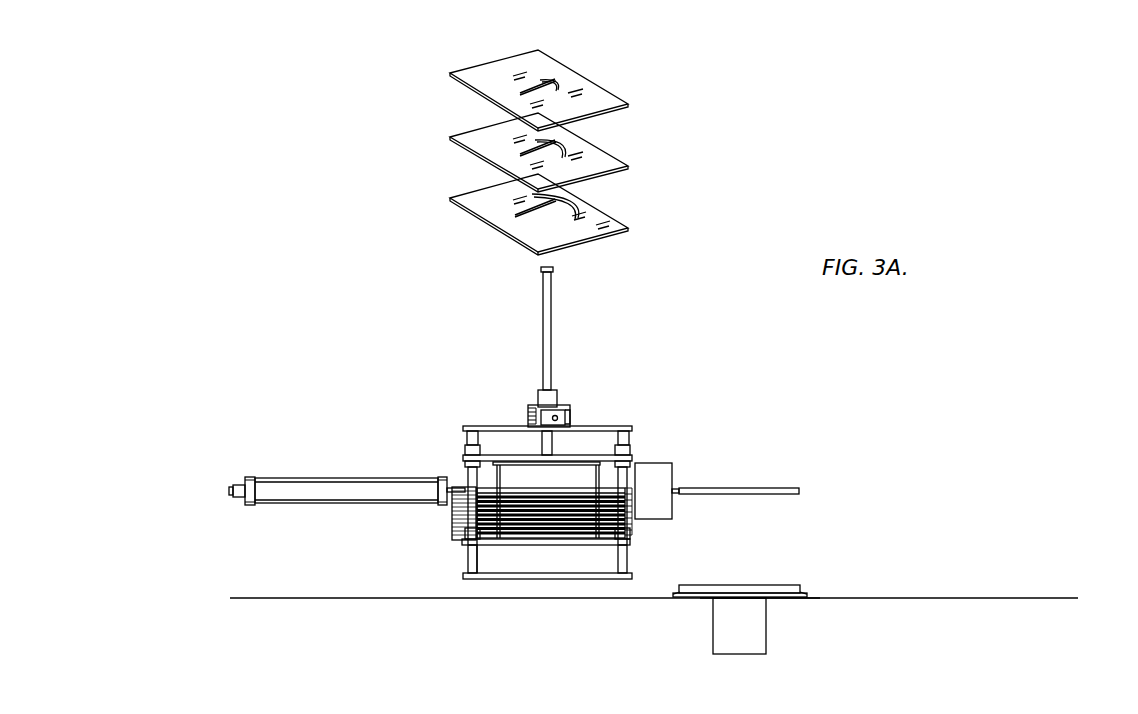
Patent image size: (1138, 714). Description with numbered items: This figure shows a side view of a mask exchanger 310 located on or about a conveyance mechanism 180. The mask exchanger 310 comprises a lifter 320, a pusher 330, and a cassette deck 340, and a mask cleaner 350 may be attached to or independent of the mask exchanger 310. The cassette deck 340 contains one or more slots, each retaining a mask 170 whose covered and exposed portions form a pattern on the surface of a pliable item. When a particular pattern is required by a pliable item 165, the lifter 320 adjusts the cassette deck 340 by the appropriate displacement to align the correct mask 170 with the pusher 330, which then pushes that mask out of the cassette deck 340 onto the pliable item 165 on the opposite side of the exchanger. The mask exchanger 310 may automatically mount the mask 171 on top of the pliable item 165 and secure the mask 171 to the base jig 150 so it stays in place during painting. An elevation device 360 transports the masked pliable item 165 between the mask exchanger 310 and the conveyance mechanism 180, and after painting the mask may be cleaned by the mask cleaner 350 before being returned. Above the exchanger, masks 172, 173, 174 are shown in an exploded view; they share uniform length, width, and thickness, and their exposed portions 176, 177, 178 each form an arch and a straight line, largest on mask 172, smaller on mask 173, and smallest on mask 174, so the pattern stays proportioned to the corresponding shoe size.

The base jig 150 is at (780, 600).
The pliable item 165 is at (805, 592).
The mask 170 is at (632, 527).
The mask 171 is at (732, 488).
The mask 172 is at (579, 214).
The mask 173 is at (579, 151).
The mask 174 is at (581, 81).
The exposed portion 176 is at (527, 212).
The exposed portion 177 is at (530, 150).
The exposed portion 178 is at (559, 88).
The conveyance mechanism 180 is at (1060, 615).
The mask exchanger 310 is at (469, 423).
The lifter 320 is at (551, 335).
The pusher 330 is at (343, 477).
The cassette deck 340 is at (600, 443).
The mask cleaner 350 is at (655, 462).
The elevation device 360 is at (708, 618).